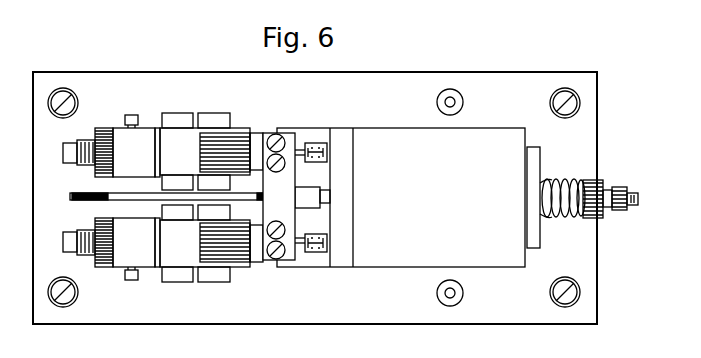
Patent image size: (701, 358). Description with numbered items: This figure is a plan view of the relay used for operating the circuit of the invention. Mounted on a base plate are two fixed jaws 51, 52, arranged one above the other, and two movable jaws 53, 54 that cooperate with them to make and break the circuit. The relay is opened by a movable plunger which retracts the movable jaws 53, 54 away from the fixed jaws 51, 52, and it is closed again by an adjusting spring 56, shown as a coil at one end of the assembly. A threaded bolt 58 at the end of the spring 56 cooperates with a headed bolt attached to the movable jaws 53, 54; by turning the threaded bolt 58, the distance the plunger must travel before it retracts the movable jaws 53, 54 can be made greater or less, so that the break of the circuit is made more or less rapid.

The fixed jaw 51 is at (223, 142).
The fixed jaw 52 is at (227, 250).
The movable jaw 53 is at (262, 140).
The movable jaw 54 is at (256, 253).
The adjusting spring 56 is at (568, 183).
The threaded bolt 58 is at (629, 189).